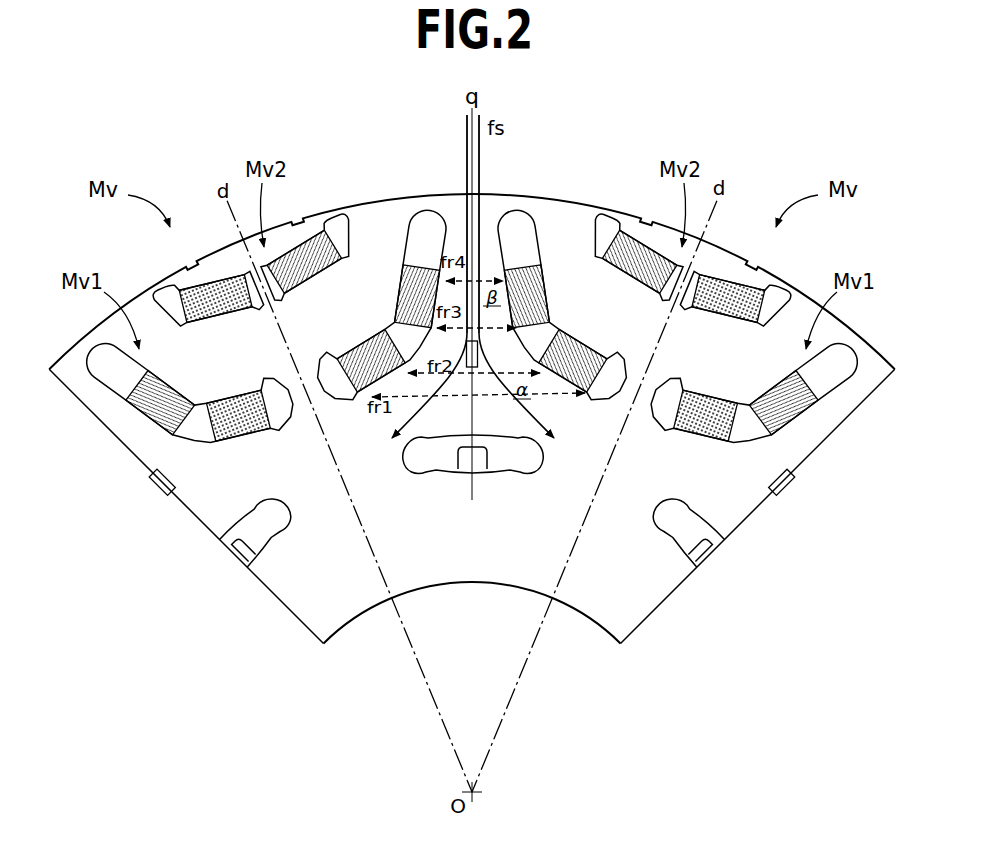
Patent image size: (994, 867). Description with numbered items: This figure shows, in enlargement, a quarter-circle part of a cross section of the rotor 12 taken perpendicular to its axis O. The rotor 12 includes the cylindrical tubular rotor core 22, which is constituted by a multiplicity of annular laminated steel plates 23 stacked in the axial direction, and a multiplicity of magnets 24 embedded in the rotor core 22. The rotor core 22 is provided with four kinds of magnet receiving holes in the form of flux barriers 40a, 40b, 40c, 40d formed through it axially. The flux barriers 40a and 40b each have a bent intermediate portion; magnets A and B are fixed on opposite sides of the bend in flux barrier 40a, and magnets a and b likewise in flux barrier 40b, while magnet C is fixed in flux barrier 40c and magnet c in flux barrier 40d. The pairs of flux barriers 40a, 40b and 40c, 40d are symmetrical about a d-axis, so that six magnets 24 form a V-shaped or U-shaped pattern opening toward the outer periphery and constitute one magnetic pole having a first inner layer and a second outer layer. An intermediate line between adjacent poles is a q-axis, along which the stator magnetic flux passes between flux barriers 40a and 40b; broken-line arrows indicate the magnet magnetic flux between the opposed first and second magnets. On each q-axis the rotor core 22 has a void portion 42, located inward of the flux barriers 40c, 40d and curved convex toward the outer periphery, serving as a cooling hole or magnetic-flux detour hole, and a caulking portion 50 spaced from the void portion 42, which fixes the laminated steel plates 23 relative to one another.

The rotor 12 is at (652, 141).
The rotor core 22 is at (104, 469).
The laminated steel plates 23 is at (636, 602).
The magnet 24 is at (396, 292).
The flux barrier 40a is at (414, 216).
The flux barrier 40b is at (95, 347).
The flux barrier 40c is at (339, 240).
The flux barrier 40d is at (158, 296).
The void portion 42 is at (497, 448).
The caulking portion 50 is at (452, 470).